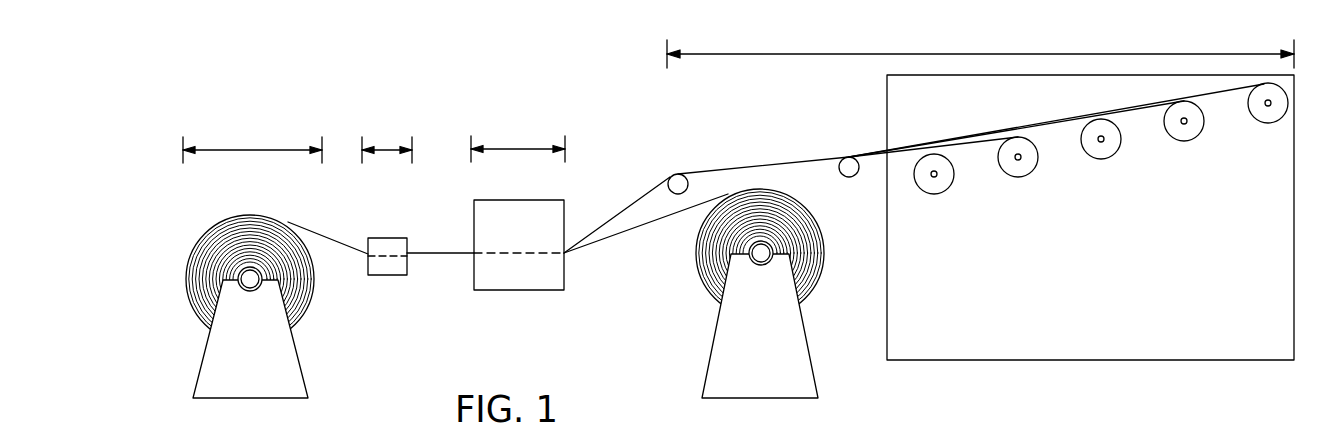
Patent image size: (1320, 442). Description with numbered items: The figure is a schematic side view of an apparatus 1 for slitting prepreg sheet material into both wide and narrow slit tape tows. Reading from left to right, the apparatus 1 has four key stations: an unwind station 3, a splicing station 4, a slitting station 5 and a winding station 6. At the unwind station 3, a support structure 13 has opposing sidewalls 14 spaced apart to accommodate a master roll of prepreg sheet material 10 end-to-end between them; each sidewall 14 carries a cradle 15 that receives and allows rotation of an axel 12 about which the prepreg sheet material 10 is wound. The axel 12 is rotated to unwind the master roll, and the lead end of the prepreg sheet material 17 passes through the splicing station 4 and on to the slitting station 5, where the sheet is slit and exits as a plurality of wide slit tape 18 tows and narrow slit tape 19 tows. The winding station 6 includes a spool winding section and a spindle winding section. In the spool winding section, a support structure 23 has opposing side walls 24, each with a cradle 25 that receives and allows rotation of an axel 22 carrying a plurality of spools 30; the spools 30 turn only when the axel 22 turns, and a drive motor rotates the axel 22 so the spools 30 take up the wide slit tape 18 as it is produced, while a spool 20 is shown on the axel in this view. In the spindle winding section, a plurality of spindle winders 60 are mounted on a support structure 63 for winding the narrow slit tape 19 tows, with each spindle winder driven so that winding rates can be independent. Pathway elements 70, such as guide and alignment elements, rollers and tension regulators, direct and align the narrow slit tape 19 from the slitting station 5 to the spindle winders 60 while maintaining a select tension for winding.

The apparatus 1 is at (578, 94).
The unwind station 3 is at (252, 141).
The splicing station 4 is at (388, 316).
The slitting station 5 is at (532, 331).
The winding station 6 is at (980, 48).
The prepreg sheet material 10 is at (303, 306).
The axel 12 is at (244, 272).
The support structure 13 is at (300, 385).
The sidewalls 14 is at (228, 350).
The cradle 15 is at (258, 291).
The prepreg sheet material 17 is at (432, 252).
The wide slit tape 18 is at (616, 240).
The narrow slit tape 19 is at (600, 226).
The take-up spool 20 is at (800, 213).
The axel 22 is at (770, 250).
The support structure 23 is at (715, 378).
The sidewalls 24 is at (795, 340).
The cradle 25 is at (762, 265).
The spools 30 is at (755, 252).
The spindle winders 60 is at (1018, 160).
The support structure 63 is at (1141, 244).
The pathway elements 70 is at (678, 177).